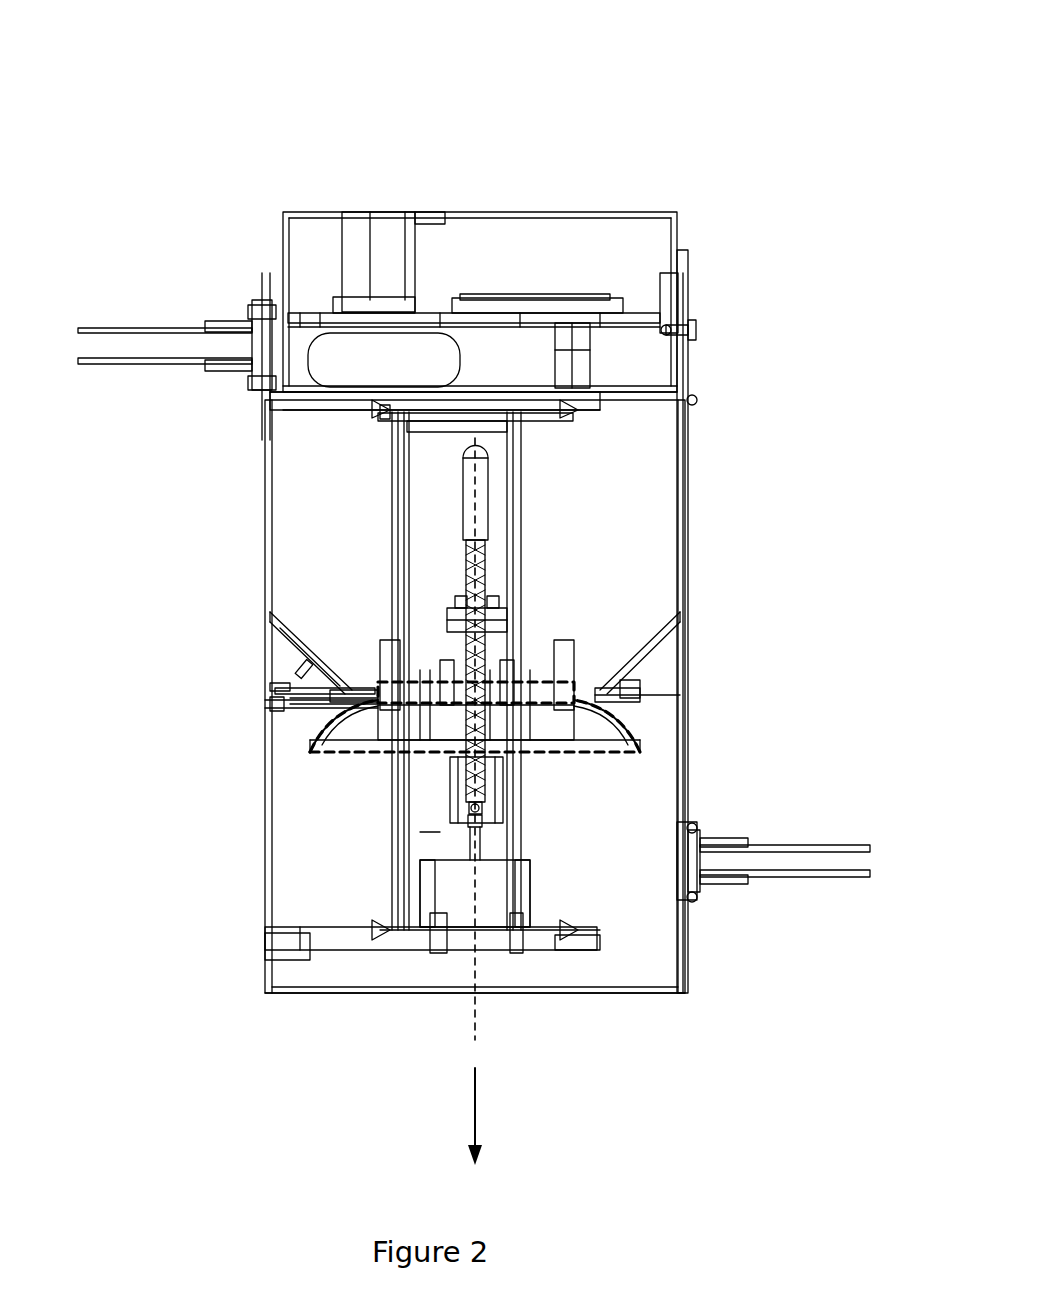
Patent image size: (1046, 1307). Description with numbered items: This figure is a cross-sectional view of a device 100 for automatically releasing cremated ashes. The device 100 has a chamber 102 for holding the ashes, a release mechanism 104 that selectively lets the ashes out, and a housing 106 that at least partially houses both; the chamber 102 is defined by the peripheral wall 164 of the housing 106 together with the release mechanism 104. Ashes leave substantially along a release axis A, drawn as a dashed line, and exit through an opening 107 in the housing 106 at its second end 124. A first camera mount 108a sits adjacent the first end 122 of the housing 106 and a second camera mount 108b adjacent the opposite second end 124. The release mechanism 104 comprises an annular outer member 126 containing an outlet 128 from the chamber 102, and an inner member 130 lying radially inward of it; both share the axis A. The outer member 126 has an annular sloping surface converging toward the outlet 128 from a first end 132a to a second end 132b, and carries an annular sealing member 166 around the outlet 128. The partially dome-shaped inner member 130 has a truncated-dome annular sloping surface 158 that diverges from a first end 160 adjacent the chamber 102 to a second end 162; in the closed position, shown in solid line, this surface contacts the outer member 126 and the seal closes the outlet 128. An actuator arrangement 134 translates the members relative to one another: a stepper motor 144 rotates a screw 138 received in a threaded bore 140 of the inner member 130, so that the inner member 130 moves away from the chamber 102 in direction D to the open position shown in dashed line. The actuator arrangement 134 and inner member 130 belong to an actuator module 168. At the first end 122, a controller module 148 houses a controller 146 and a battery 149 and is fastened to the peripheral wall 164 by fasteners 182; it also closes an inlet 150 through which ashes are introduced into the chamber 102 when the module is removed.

The device 100 is at (284, 130).
The chamber 102 is at (312, 548).
The release mechanism 104 is at (668, 686).
The housing 106 is at (710, 452).
The opening 107 is at (400, 1000).
The first camera mount 108a is at (130, 312).
The second camera mount 108b is at (797, 890).
The first end of the housing 122 is at (255, 298).
The second end of the housing 124 is at (278, 940).
The outer member 126 is at (295, 650).
The outlet 128 is at (370, 678).
The inner member 130 is at (560, 655).
The first end of the annular sloping surface 132a is at (270, 610).
The second end of the annular sloping surface 132b is at (345, 689).
The actuator arrangement 134 is at (562, 830).
The screw 138 is at (480, 565).
The threaded bore 140 is at (472, 660).
The stepper motor 144 is at (450, 880).
The controller 146 is at (548, 300).
The controller module 148 is at (515, 200).
The battery 149 is at (326, 358).
The inlet 150 is at (620, 395).
The annular sloping surface of the inner member 158 is at (590, 720).
The first end of the annular sloping surface 160 is at (590, 690).
The second end of the annular sloping surface 162 is at (308, 742).
The peripheral wall 164 is at (686, 542).
The annular sealing member 166 is at (268, 710).
The actuator module 168 is at (350, 782).
The fasteners 182 is at (692, 330).
The release axis A is at (478, 1037).
The direction D is at (479, 1110).